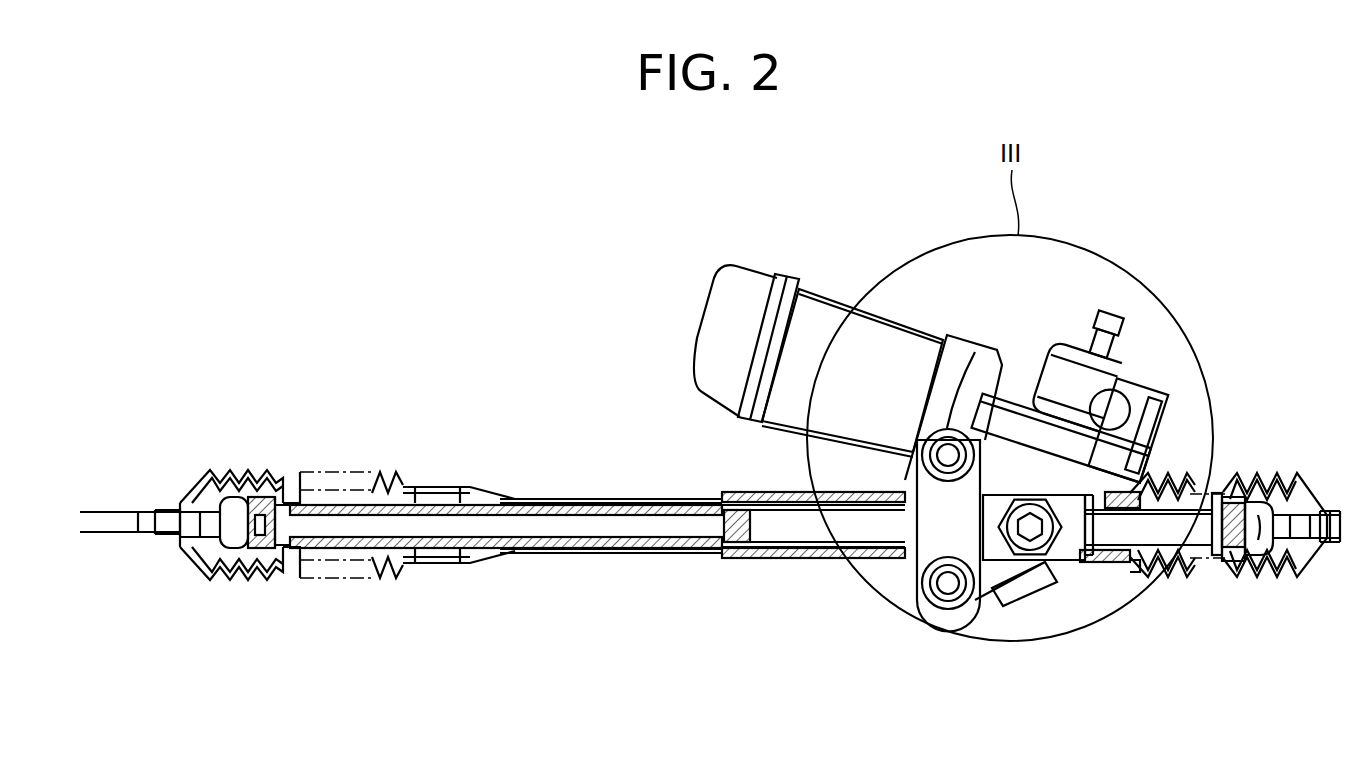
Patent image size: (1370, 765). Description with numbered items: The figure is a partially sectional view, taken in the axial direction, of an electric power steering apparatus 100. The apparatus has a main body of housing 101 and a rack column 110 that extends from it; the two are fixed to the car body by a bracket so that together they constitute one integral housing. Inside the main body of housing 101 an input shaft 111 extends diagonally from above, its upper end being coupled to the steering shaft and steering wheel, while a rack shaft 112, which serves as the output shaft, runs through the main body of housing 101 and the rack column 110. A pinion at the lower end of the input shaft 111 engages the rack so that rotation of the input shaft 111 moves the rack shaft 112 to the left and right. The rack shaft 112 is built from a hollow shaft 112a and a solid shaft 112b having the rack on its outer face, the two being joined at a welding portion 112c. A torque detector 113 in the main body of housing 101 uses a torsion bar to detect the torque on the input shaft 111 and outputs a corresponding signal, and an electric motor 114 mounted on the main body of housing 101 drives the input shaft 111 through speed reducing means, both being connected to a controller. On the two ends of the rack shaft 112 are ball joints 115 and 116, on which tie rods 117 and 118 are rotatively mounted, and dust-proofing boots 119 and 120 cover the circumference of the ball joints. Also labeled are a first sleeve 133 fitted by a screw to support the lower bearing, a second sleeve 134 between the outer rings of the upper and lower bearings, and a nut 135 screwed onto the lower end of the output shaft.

The electric power steering apparatus 100 is at (748, 578).
The main body of housing 101 is at (950, 615).
The rack column 110 is at (572, 548).
The input shaft 111 is at (1110, 308).
The rack shaft 112 is at (850, 527).
The hollow shaft 112a is at (582, 500).
The solid shaft 112b is at (783, 518).
The welding portion 112c is at (660, 555).
The torque detector 113 is at (1175, 393).
The electric motor 114 is at (880, 345).
The ball joint 115 is at (232, 545).
The ball joint 116 is at (1268, 545).
The tie rod 117 is at (112, 523).
The tie rod 118 is at (1326, 548).
The dust-proofing boot 119 is at (233, 477).
The dust-proofing boot 120 is at (1252, 477).
The first sleeve 133 is at (1226, 560).
The second sleeve 134 is at (1215, 555).
The nut 135 is at (1135, 560).